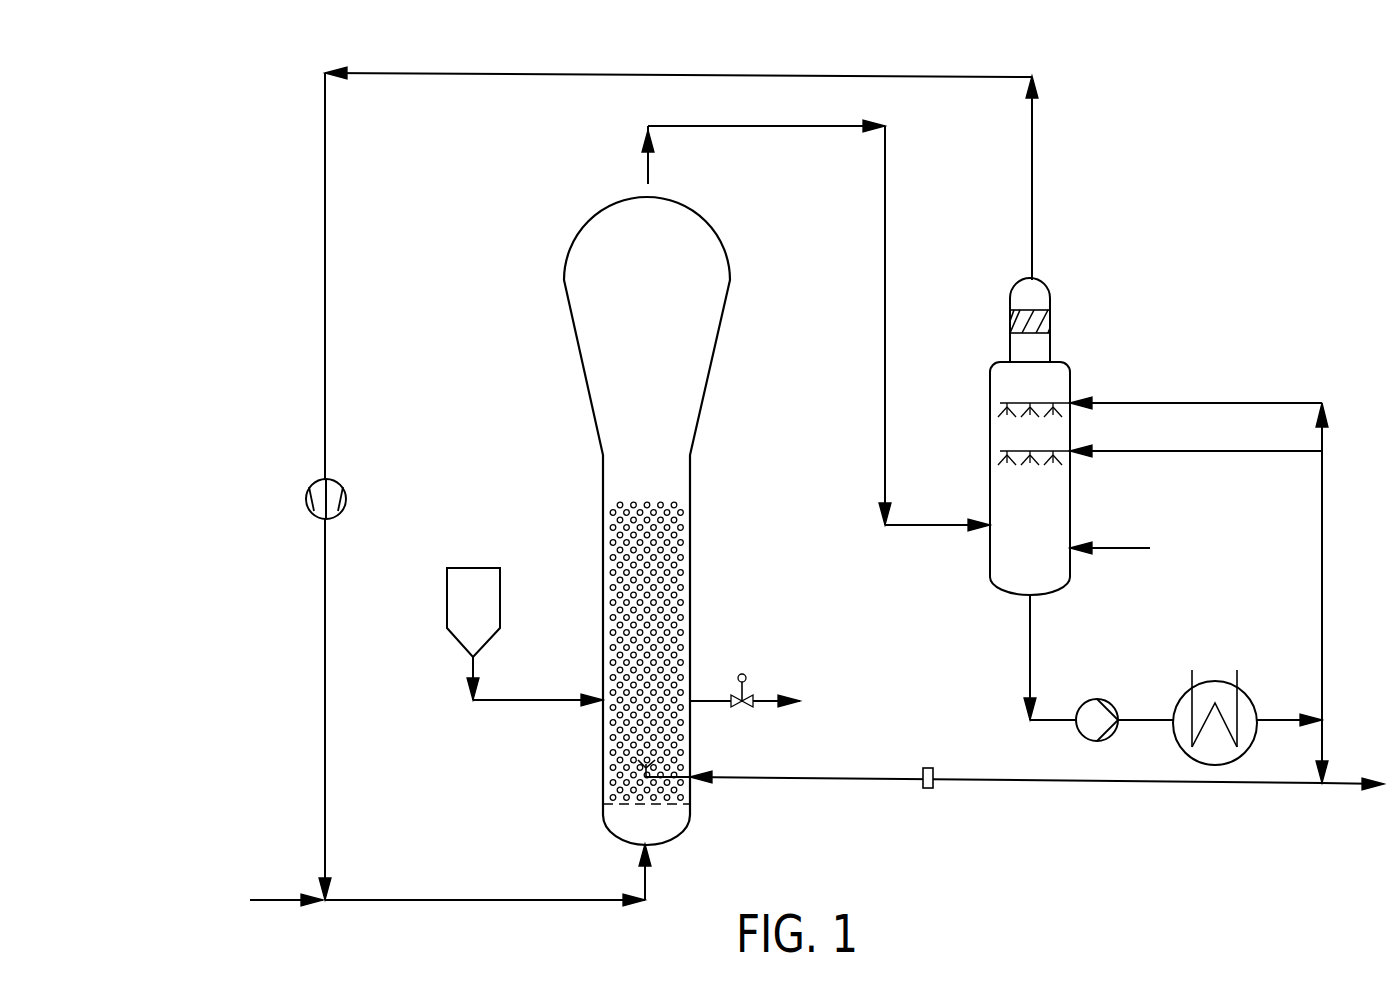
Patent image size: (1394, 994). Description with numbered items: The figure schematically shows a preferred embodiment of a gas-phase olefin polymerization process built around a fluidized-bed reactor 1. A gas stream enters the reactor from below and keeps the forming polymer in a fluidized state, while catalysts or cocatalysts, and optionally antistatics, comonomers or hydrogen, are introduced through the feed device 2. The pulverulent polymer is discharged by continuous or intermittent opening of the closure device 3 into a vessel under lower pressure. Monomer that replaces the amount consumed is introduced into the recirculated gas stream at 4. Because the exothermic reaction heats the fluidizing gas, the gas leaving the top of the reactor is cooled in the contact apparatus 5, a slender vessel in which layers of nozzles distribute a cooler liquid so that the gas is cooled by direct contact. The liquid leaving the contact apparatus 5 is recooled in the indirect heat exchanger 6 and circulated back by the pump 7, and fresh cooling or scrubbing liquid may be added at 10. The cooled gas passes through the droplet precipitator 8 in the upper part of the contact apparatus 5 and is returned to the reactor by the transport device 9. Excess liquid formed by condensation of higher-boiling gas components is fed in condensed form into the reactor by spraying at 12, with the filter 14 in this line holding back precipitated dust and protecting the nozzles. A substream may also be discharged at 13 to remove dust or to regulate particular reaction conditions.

The fluidized-bed reactor 1 is at (692, 380).
The feed device 2 is at (467, 623).
The closure device 3 is at (742, 674).
The monomer introduction point 4 is at (293, 898).
The contact apparatus 5 is at (1055, 513).
The indirect heat exchanger 6 is at (1252, 688).
The pump 7 is at (1088, 700).
The droplet precipitator 8 is at (1050, 323).
The transport device 9 is at (327, 502).
The fresh cooling liquid inlet 10 is at (1127, 548).
The liquid spraying point 12 is at (980, 809).
The substream discharge 13 is at (1340, 790).
The filter 14 is at (928, 788).